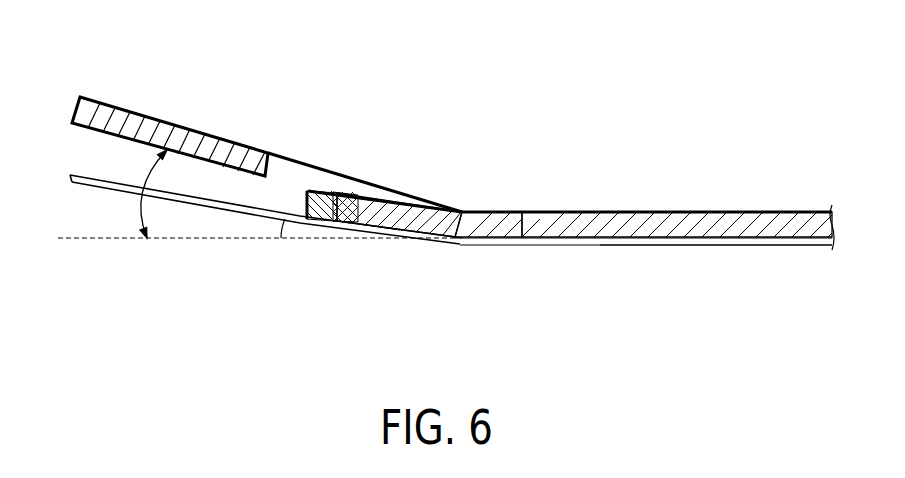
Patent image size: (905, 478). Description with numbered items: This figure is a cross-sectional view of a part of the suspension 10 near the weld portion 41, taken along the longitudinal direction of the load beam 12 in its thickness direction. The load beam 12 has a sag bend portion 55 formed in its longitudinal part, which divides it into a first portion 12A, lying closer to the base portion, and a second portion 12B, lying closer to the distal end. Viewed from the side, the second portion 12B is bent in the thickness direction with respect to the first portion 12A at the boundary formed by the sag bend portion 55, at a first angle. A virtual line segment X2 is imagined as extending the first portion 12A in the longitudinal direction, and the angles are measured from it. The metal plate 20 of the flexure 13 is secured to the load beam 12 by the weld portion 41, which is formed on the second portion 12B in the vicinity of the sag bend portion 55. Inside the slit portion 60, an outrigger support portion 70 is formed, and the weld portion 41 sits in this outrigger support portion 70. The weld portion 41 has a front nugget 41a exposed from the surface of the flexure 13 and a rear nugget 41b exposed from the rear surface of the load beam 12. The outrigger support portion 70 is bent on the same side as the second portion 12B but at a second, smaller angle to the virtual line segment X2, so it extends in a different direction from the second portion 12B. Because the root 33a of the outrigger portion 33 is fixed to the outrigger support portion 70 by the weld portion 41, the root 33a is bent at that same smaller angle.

The suspension 10 is at (510, 98).
The load beam 12 is at (548, 212).
The first portion 12A is at (668, 212).
The second portion 12B is at (130, 110).
The flexure 13 is at (577, 245).
The metal plate 20 is at (710, 247).
The outrigger portion 33 is at (112, 184).
The root 33a is at (380, 232).
The weld portion 41 is at (320, 190).
The front nugget 41a is at (343, 226).
The rear nugget 41b is at (345, 195).
The sag bend portion 55 is at (457, 247).
The slit portion 60 is at (291, 150).
The outrigger support portion 70 is at (390, 210).
The virtual line segment X2 is at (173, 240).